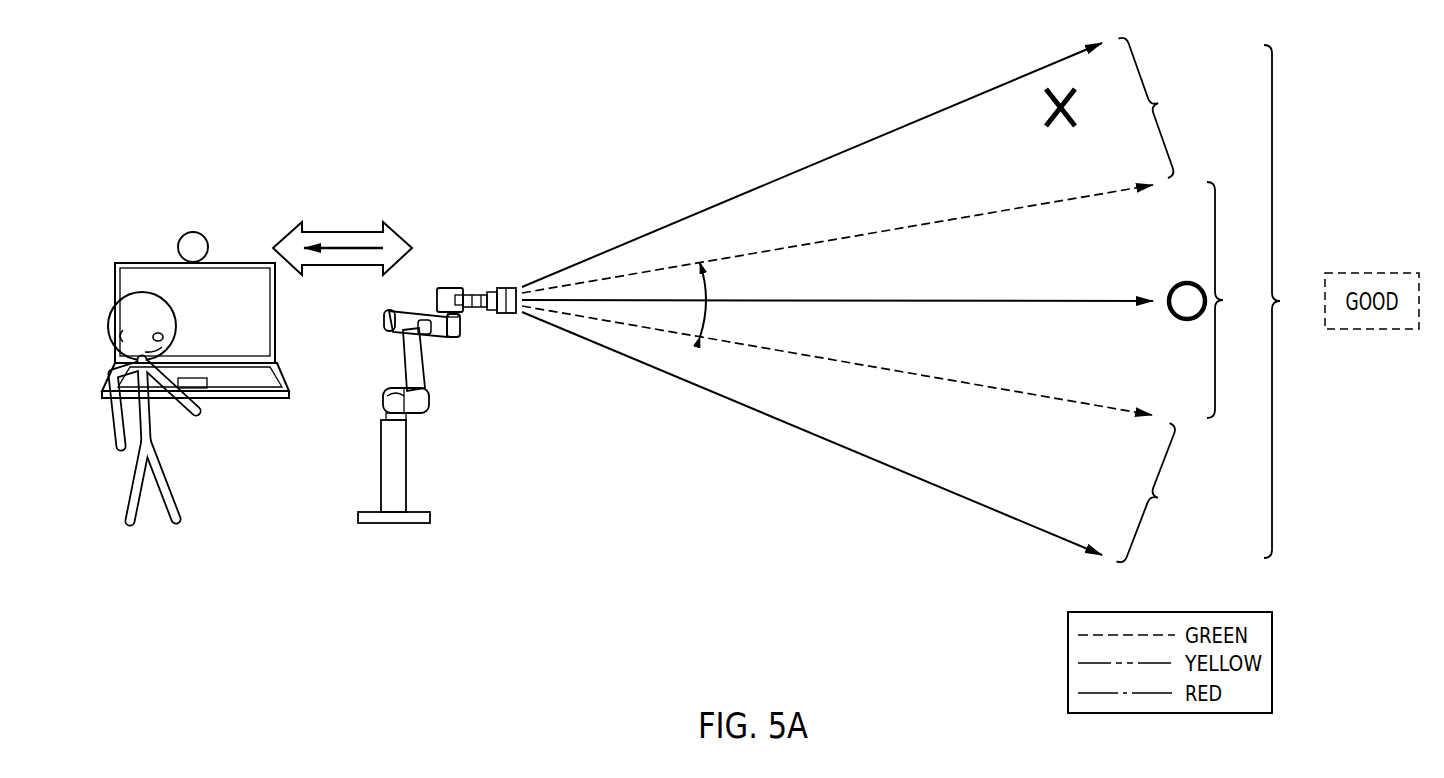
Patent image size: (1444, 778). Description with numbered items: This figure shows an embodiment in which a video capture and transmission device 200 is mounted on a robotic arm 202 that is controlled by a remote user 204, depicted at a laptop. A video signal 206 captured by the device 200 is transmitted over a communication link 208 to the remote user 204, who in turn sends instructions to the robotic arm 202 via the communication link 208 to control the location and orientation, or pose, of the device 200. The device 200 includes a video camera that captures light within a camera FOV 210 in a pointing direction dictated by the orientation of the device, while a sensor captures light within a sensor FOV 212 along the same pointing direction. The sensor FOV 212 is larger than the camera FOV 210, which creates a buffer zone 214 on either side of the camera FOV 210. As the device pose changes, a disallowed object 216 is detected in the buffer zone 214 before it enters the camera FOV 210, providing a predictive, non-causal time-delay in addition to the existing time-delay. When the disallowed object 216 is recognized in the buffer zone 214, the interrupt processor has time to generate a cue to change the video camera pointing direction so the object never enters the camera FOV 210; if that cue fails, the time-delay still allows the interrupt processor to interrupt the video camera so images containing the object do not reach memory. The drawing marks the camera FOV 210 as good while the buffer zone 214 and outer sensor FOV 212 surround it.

The video capture and transmission device 200 is at (497, 289).
The robotic arm 202 is at (405, 354).
The remote user 204 is at (120, 252).
The video signal 206 is at (340, 246).
The communication link 208 is at (288, 237).
The camera FOV 210 is at (1214, 300).
The sensor FOV 212 is at (1215, 306).
The buffer zone 214 is at (1157, 105).
The disallowed object 216 is at (1080, 107).